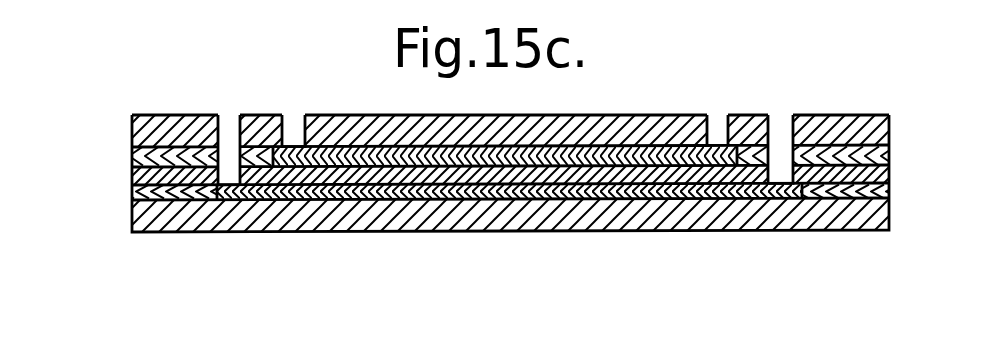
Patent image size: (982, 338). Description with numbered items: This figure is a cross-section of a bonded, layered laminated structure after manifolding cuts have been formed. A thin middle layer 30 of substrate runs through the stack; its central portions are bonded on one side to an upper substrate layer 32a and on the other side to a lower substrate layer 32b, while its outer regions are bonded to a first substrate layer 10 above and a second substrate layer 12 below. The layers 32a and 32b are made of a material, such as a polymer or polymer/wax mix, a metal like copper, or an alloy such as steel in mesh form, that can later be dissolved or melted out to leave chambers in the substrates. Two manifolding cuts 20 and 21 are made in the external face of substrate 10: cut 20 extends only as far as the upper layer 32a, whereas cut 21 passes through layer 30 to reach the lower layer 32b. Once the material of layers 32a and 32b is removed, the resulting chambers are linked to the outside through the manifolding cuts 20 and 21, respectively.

The first substrate layer 10 is at (141, 153).
The second substrate layer 12 is at (141, 215).
The manifolding cut 20 is at (291, 127).
The manifolding cut 21 is at (229, 128).
The thin middle layer 30 is at (607, 168).
The upper substrate layer 32a is at (407, 172).
The lower substrate layer 32b is at (419, 198).